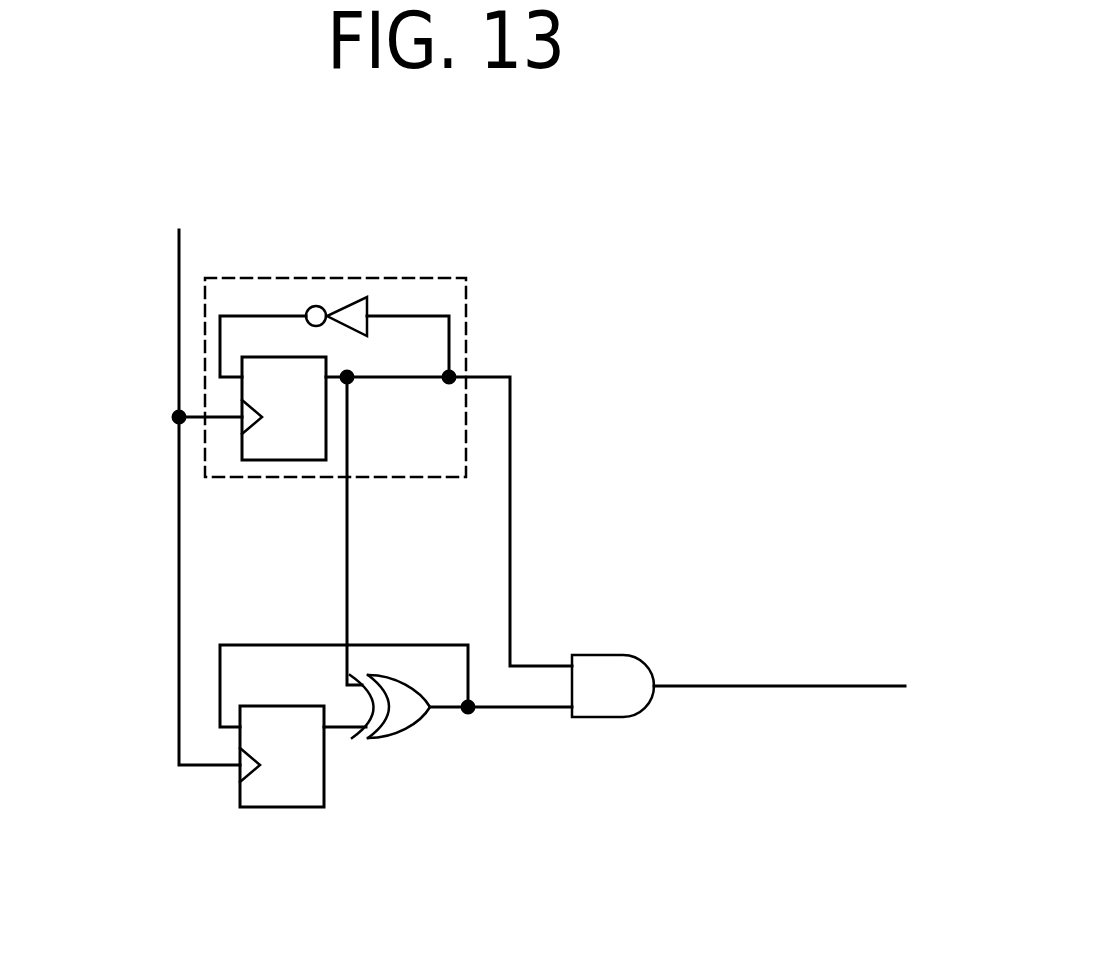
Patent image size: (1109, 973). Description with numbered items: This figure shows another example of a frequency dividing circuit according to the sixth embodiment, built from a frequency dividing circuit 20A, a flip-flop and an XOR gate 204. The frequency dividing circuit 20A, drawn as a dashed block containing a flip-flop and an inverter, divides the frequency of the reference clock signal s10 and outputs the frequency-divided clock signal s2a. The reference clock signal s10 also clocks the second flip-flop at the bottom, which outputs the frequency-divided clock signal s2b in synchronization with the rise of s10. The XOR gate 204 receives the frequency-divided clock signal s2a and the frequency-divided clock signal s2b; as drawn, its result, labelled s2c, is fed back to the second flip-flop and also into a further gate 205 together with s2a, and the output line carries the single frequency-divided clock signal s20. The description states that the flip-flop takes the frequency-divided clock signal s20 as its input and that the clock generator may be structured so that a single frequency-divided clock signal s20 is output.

The frequency dividing circuit 20A is at (352, 278).
The XOR gate 204 is at (400, 740).
The AND gate 205 is at (600, 655).
The reference clock signal s10 is at (178, 537).
The frequency-divided clock signal s2a is at (510, 447).
The frequency-divided clock signal s2b is at (353, 730).
The exclusive OR output signal s2c is at (530, 706).
The frequency-divided clock signal s20 is at (782, 686).